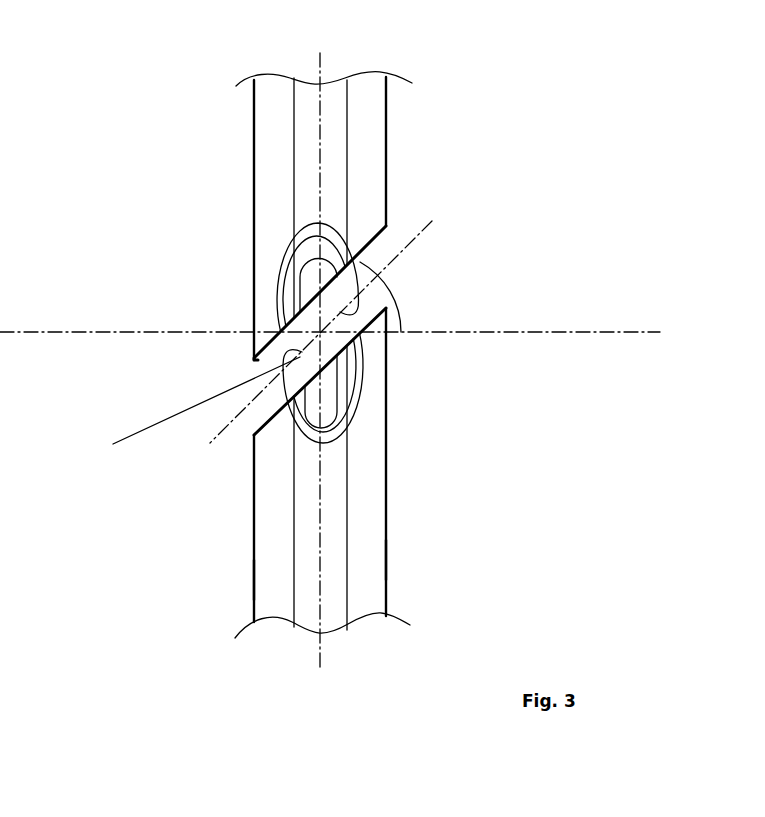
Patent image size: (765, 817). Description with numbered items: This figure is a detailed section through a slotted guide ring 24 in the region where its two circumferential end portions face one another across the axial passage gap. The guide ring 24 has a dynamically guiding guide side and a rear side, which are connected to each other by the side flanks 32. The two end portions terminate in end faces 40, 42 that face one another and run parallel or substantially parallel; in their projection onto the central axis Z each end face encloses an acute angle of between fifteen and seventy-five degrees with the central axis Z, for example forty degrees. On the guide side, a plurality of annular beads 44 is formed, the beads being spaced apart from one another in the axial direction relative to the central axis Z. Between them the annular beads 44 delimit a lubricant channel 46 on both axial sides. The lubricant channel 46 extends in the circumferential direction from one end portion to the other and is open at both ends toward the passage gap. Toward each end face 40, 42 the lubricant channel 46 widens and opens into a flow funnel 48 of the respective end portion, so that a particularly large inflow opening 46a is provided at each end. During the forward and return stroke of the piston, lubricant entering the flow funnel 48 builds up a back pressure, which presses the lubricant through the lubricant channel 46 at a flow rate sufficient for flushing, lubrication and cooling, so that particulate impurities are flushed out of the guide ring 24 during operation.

The guide ring 24 is at (438, 65).
The side flanks 32 is at (254, 500).
The end face 40 is at (272, 362).
The end face 42 is at (276, 424).
The annular beads 44 is at (273, 558).
The lubricant channel 46 is at (342, 151).
The inflow opening 46a is at (335, 291).
The flow funnel 48 is at (300, 283).
The central axis Z is at (68, 332).